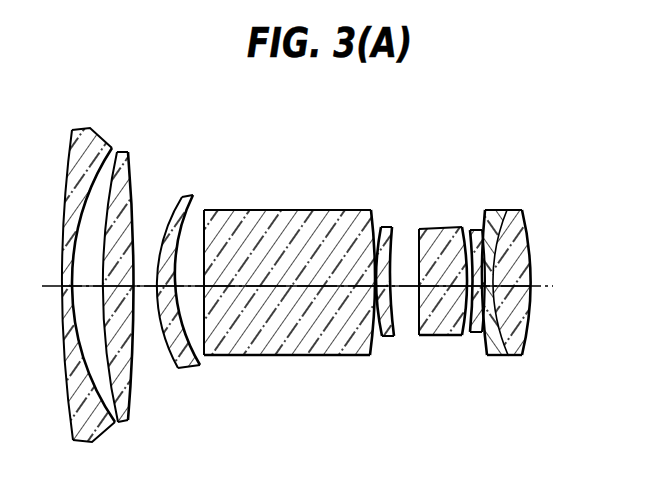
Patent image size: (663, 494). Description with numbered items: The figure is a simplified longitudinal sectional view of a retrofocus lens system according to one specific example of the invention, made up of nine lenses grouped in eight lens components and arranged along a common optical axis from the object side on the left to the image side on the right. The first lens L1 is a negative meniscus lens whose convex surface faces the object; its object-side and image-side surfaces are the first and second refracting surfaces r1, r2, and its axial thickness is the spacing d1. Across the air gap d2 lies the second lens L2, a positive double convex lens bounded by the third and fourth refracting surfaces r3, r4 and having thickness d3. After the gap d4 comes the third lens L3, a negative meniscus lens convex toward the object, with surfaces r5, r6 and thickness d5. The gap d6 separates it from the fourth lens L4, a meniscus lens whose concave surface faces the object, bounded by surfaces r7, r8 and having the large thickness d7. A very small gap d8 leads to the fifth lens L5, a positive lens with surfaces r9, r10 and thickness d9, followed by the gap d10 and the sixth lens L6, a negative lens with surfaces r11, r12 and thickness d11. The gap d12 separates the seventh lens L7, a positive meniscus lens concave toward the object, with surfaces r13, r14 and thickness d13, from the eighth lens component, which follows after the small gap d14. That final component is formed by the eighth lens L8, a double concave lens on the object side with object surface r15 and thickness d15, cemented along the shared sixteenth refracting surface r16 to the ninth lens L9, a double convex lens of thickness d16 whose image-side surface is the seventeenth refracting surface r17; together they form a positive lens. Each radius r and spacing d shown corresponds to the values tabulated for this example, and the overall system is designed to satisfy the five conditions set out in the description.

The first lens L1 is at (77, 265).
The second lens L2 is at (130, 260).
The third lens L3 is at (181, 253).
The fourth lens L4 is at (289, 262).
The fifth lens L5 is at (399, 248).
The sixth lens L6 is at (447, 242).
The seventh lens L7 is at (520, 250).
The eighth lens L8 is at (519, 252).
The ninth lens L9 is at (543, 274).
The first refracting surface r1 is at (70, 143).
The second refracting surface r2 is at (111, 147).
The third refracting surface r3 is at (114, 167).
The fourth refracting surface r4 is at (133, 178).
The fifth refracting surface r5 is at (175, 208).
The sixth refracting surface r6 is at (196, 184).
The seventh refracting surface r7 is at (206, 212).
The eighth refracting surface r8 is at (366, 212).
The ninth refracting surface r9 is at (382, 227).
The tenth refracting surface r10 is at (395, 228).
The eleventh refracting surface r11 is at (420, 228).
The twelfth refracting surface r12 is at (462, 228).
The thirteenth refracting surface r13 is at (470, 229).
The fourteenth refracting surface r14 is at (485, 262).
The fifteenth refracting surface r15 is at (484, 222).
The sixteenth refracting surface r16 is at (511, 208).
The seventeenth refracting surface r17 is at (530, 212).
The first lens surface spacing d1 is at (70, 287).
The second lens surface spacing d2 is at (87, 288).
The third lens surface spacing d3 is at (130, 305).
The fourth lens surface spacing d4 is at (148, 285).
The fifth lens surface spacing d5 is at (170, 295).
The sixth lens surface spacing d6 is at (190, 284).
The seventh lens surface spacing d7 is at (276, 286).
The eighth lens surface spacing d8 is at (376, 293).
The ninth lens surface spacing d9 is at (379, 258).
The tenth lens surface spacing d10 is at (401, 292).
The eleventh lens surface spacing d11 is at (462, 278).
The twelfth lens surface spacing d12 is at (461, 289).
The thirteenth lens surface spacing d13 is at (471, 334).
The fourteenth lens surface spacing d14 is at (484, 292).
The fifteenth lens surface spacing d15 is at (493, 322).
The sixteenth lens surface spacing d16 is at (512, 297).